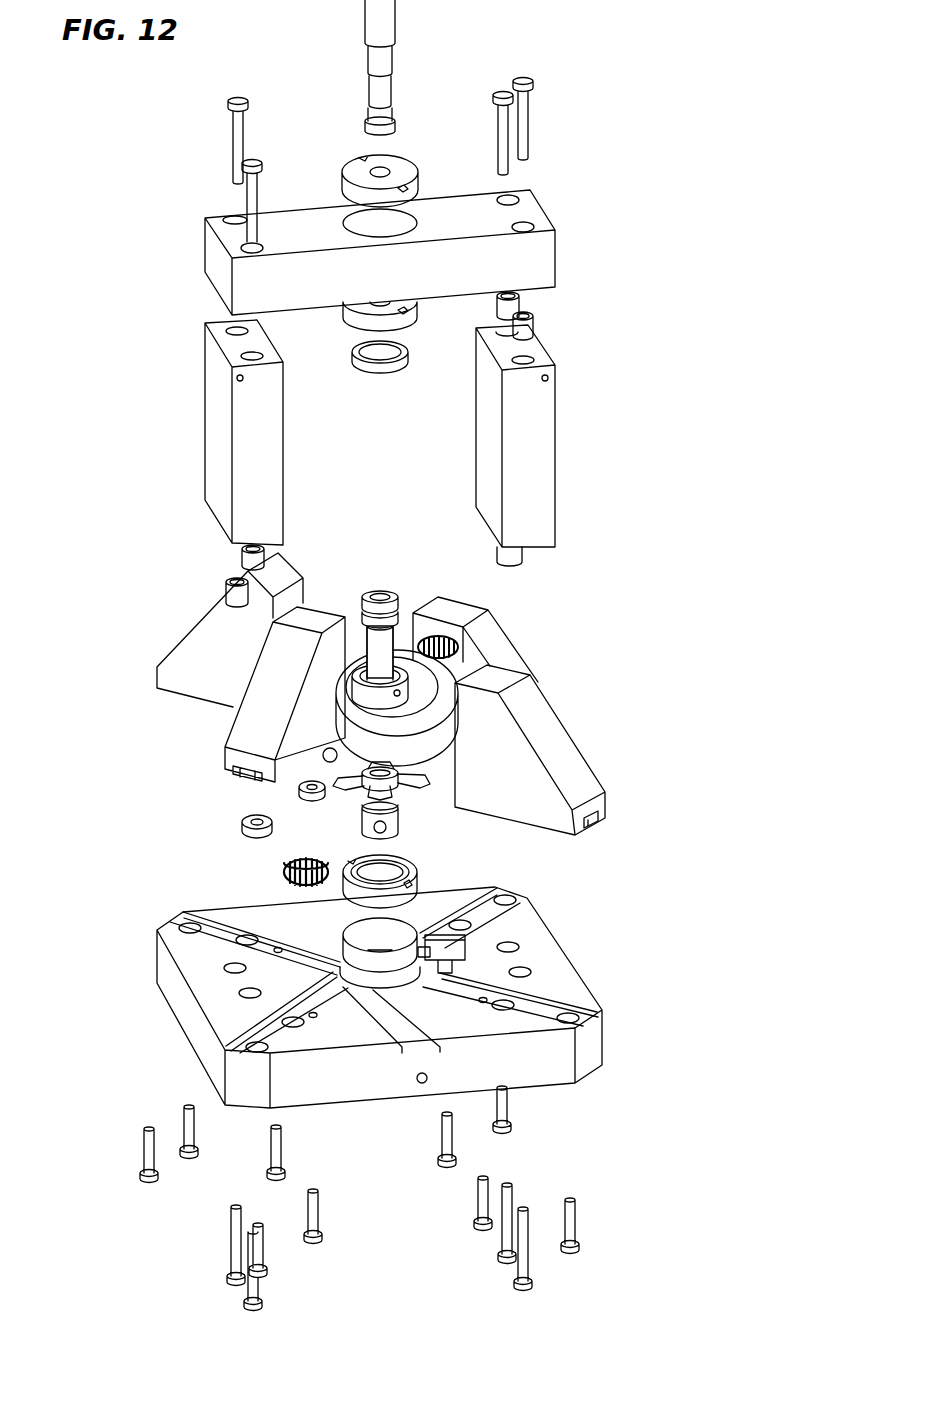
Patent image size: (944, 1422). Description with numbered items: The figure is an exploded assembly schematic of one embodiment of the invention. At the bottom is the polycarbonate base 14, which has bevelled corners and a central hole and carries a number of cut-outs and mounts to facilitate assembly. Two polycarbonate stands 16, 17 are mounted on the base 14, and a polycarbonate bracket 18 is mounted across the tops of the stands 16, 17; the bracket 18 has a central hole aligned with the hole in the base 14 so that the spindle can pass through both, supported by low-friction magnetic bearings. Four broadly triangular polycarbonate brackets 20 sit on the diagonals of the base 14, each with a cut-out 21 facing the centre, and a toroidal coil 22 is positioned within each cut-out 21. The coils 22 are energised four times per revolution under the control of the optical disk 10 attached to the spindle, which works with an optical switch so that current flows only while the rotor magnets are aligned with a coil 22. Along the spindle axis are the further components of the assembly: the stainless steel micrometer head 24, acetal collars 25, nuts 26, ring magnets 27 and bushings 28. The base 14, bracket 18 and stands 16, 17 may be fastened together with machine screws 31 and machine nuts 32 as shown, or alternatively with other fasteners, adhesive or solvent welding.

The optical disk 10 is at (408, 800).
The base 14 is at (572, 957).
The stand 16 is at (557, 440).
The stand 17 is at (205, 427).
The bracket 18 is at (555, 253).
The bracket 20 is at (573, 737).
The cut-out 21 is at (587, 826).
The toroidal coil 22 is at (498, 643).
The micrometer head 24 is at (363, 25).
The collar 25 is at (418, 884).
The nut 26 is at (343, 183).
The ring magnet 27 is at (357, 372).
The bushing 28 is at (533, 320).
The machine screw 31 is at (573, 1226).
The machine nut 32 is at (240, 818).